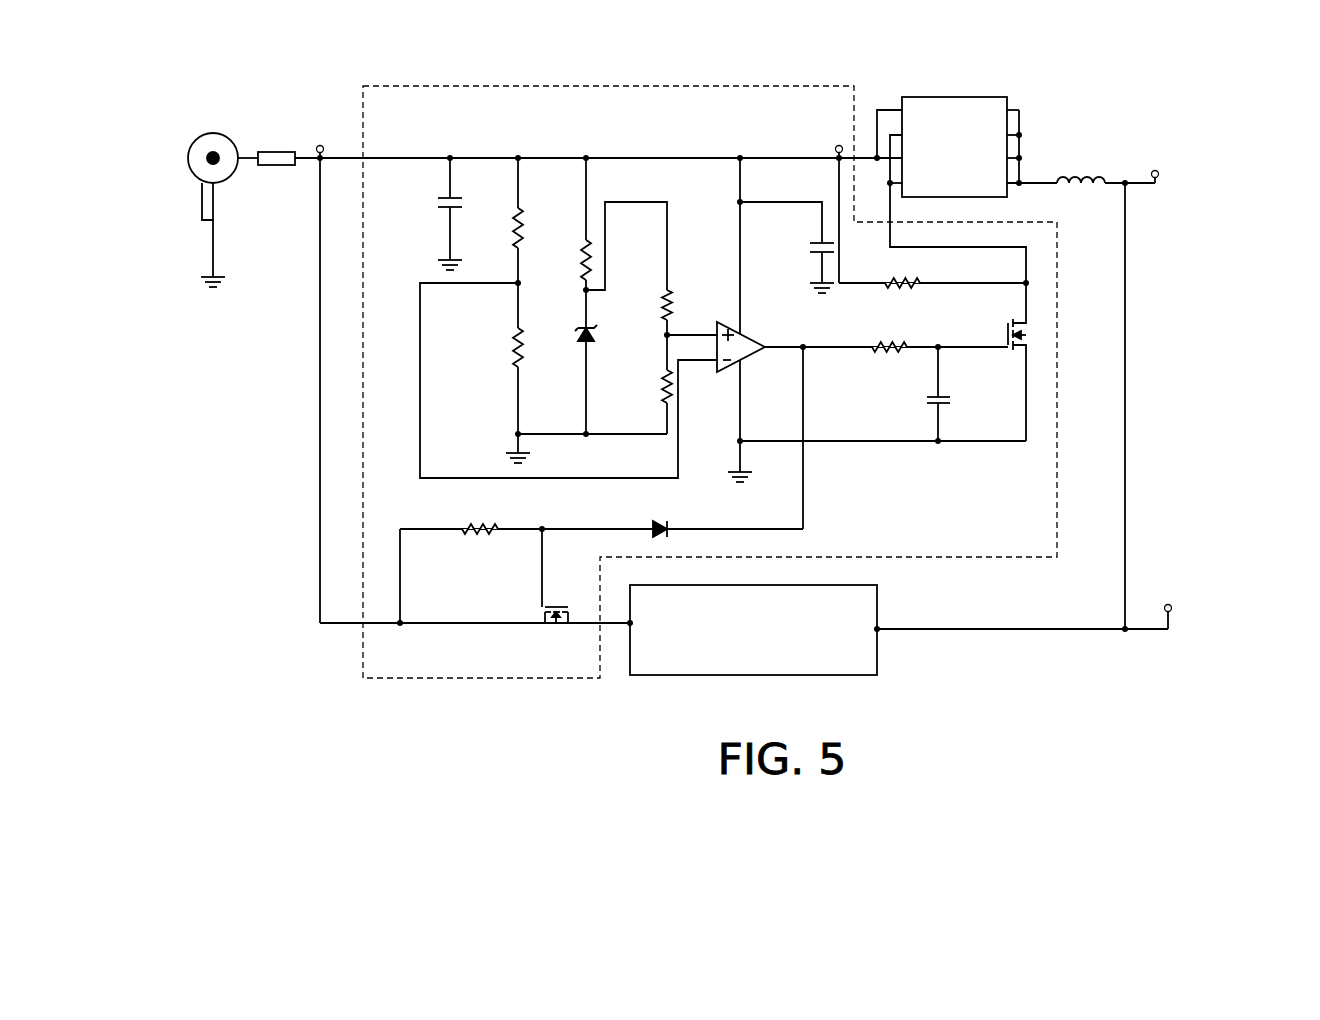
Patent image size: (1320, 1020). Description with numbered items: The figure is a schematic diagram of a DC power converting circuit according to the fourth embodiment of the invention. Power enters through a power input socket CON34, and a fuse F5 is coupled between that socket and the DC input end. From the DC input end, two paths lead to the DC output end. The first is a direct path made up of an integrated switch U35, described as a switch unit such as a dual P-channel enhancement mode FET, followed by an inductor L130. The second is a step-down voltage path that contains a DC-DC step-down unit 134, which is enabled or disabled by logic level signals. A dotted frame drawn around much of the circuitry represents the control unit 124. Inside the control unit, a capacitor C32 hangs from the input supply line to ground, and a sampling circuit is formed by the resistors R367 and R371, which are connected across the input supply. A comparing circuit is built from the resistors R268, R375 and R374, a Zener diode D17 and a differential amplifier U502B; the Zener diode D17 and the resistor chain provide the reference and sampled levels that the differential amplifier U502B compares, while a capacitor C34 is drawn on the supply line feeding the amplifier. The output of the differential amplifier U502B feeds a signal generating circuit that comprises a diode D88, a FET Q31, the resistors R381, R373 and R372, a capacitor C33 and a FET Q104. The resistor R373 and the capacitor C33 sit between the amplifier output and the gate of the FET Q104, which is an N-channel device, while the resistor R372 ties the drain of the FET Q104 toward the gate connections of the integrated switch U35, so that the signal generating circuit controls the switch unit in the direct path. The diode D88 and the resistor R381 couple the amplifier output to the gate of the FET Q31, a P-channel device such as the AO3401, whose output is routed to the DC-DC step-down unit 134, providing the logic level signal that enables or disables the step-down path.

The control unit 124 is at (633, 88).
The DC-DC step-down unit 134 is at (745, 675).
The power input socket CON34 is at (205, 197).
The fuse F5 is at (278, 177).
The capacitor C32 is at (413, 214).
The resistor R367 is at (489, 215).
The resistor R371 is at (487, 345).
The resistor R268 is at (557, 222).
The Zener diode D17 is at (562, 338).
The resistor R375 is at (638, 295).
The resistor R374 is at (637, 390).
The differential amplifier U502B is at (773, 341).
The resistor R373 is at (895, 336).
The capacitor C34 is at (787, 247).
The capacitor C33 is at (911, 394).
The resistor R372 is at (906, 273).
The FET Q104 is at (994, 362).
The resistor R381 is at (493, 515).
The diode D88 is at (664, 515).
The FET Q31 is at (558, 598).
The integrated switch U35 is at (967, 130).
The inductor L130 is at (1088, 167).